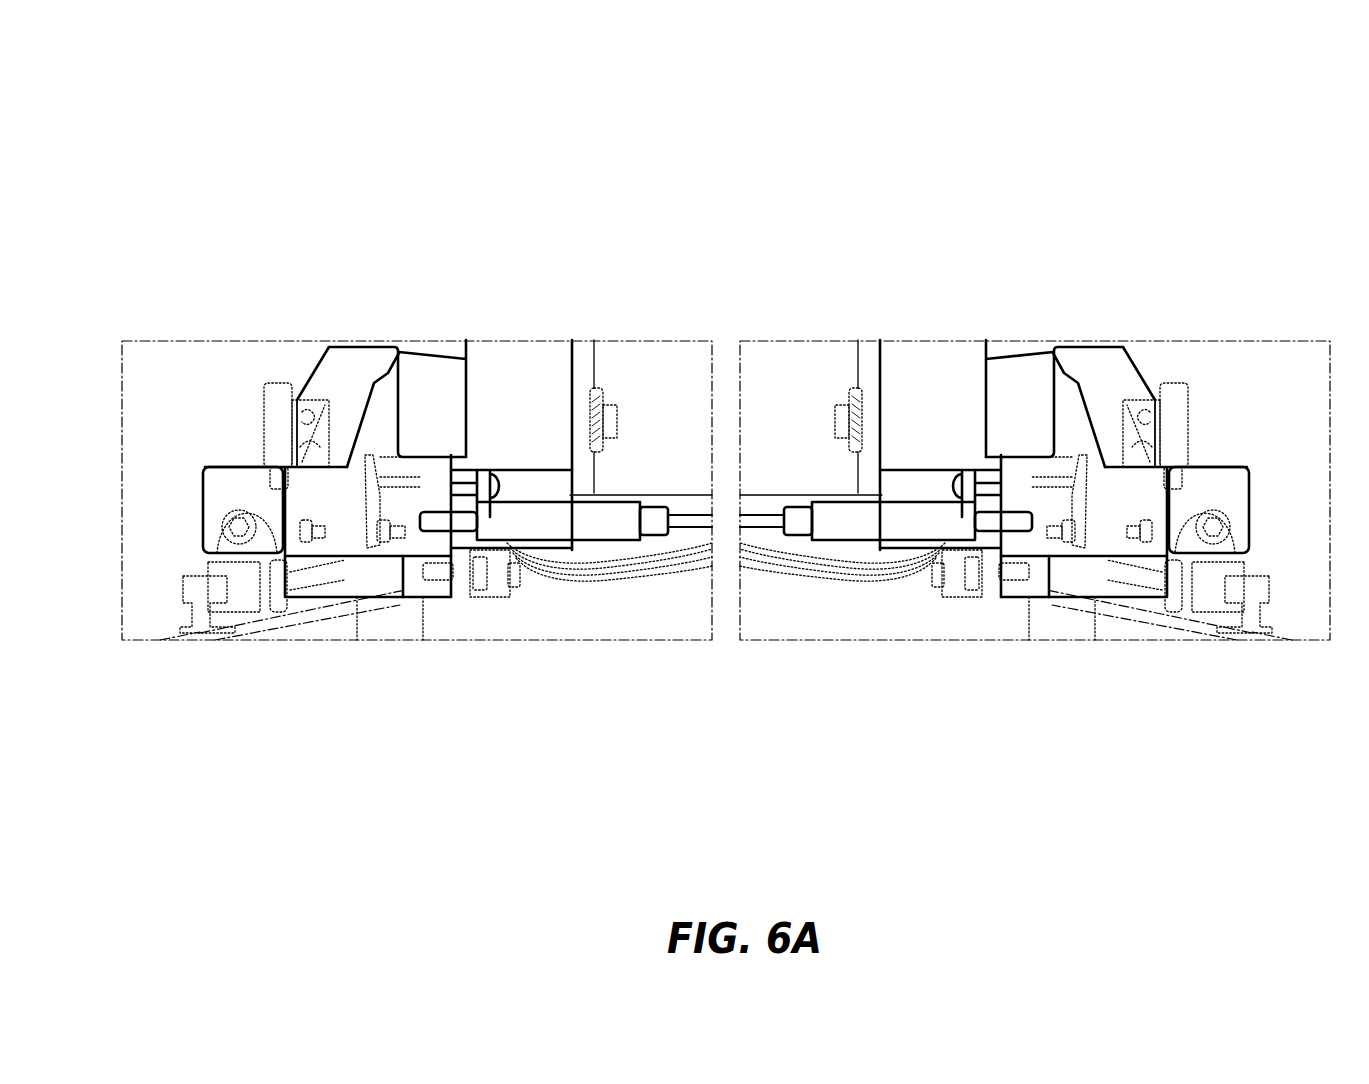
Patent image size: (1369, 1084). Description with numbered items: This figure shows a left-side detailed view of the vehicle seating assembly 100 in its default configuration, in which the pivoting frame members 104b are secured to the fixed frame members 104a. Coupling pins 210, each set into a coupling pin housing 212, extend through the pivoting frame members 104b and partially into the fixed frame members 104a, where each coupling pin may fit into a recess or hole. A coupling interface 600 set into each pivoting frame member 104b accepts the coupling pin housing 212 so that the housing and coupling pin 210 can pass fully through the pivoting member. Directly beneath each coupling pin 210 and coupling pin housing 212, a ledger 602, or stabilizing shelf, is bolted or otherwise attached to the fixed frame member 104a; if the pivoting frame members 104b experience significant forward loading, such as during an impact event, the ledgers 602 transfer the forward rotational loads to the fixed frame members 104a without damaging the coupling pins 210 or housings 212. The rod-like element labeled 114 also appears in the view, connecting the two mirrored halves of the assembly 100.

The vehicle seating assembly 100 is at (192, 96).
The fixed frame member 104a is at (340, 377).
The pivoting frame member 104b is at (528, 360).
The connecting rod 114 is at (772, 515).
The coupling pin 210 is at (433, 518).
The coupling pin housing 212 is at (610, 520).
The coupling interface 600 is at (877, 520).
The ledger 602 is at (460, 587).